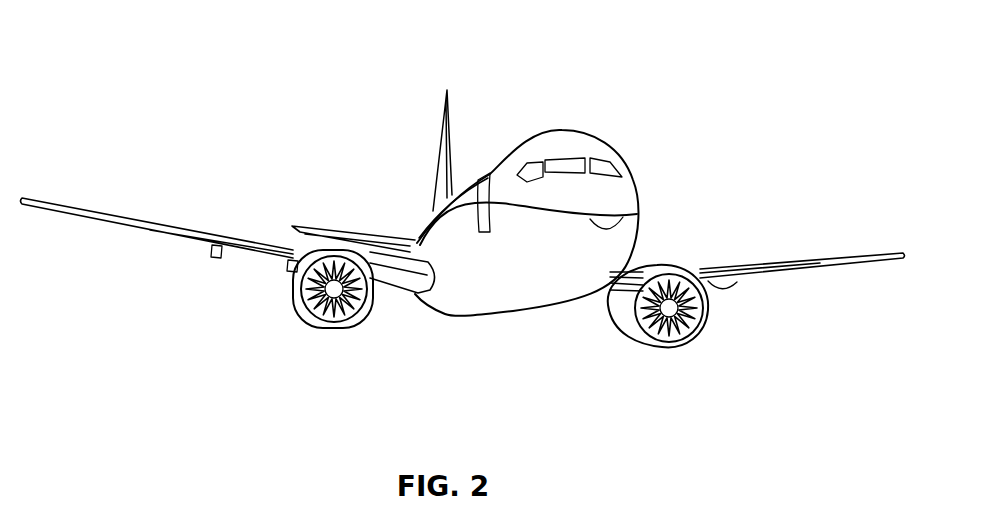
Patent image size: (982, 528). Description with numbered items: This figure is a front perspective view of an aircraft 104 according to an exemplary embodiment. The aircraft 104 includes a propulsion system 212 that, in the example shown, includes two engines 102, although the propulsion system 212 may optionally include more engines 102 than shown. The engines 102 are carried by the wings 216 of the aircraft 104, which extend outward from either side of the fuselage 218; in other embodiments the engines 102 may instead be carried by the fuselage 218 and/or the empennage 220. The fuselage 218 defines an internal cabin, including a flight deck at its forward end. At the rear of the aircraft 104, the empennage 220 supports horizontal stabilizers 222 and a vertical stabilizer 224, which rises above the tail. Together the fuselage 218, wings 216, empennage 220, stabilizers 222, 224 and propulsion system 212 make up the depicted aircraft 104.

The aircraft 104 is at (240, 62).
The engines 102 is at (332, 328).
The propulsion system 212 is at (728, 319).
The wings 216 is at (140, 221).
The fuselage 218 is at (636, 215).
The empennage 220 is at (437, 208).
The horizontal stabilizers 222 is at (327, 233).
The vertical stabilizer 224 is at (443, 122).